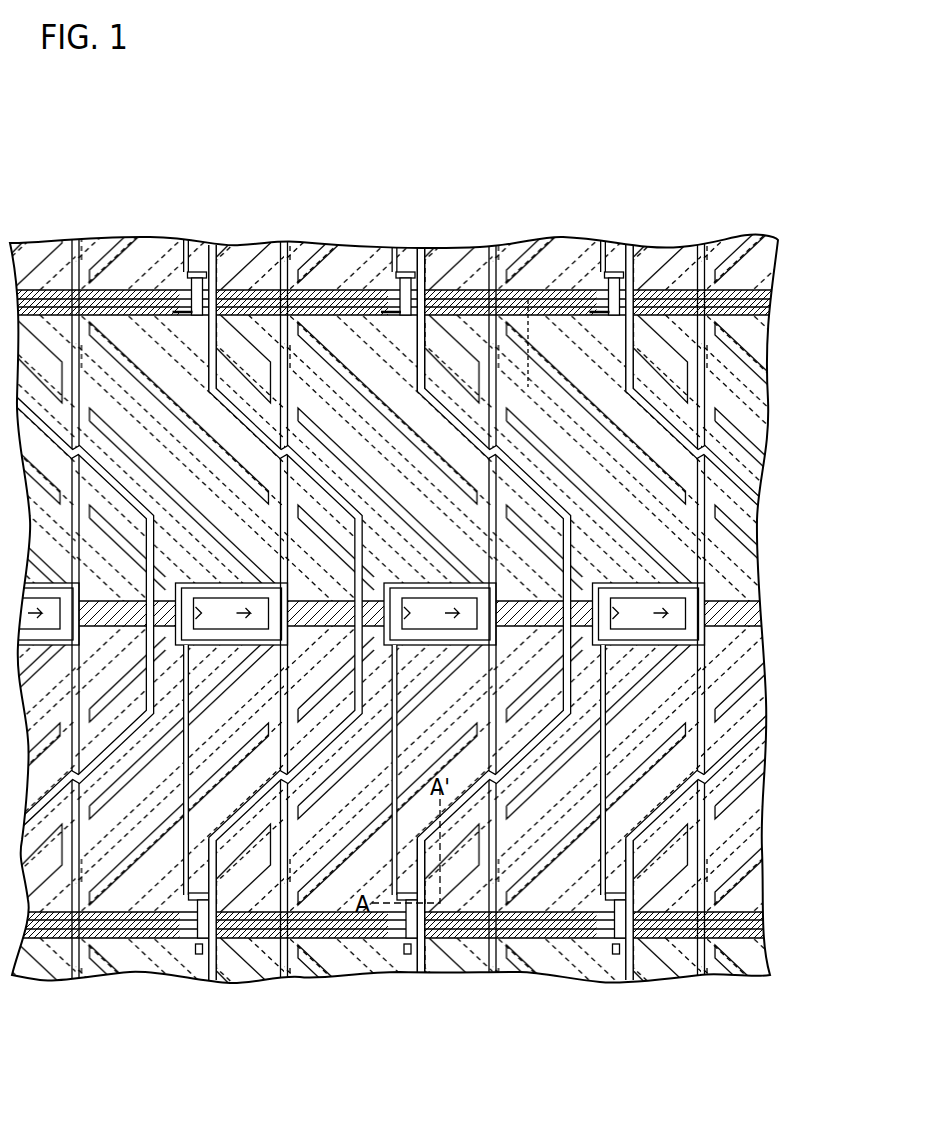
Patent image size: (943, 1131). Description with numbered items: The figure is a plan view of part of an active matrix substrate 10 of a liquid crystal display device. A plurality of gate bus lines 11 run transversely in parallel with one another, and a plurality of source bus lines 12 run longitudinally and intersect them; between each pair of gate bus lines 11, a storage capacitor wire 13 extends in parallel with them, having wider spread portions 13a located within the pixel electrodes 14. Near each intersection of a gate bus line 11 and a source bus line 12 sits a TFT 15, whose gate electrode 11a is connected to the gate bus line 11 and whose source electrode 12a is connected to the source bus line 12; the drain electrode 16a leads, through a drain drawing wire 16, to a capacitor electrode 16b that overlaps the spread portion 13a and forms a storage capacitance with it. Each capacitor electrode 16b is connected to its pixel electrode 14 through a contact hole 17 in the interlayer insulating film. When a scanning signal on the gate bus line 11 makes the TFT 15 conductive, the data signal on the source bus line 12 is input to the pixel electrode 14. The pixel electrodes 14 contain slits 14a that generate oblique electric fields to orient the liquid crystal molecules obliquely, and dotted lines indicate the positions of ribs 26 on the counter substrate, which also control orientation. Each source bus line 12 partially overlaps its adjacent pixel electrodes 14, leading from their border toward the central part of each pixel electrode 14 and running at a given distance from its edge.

The active matrix substrate 10 is at (700, 143).
The gate bus line 11 is at (767, 301).
The gate electrode 11a is at (625, 893).
The source bus line 12 is at (206, 353).
The source electrode 12a is at (631, 932).
The storage capacitor wire 13 is at (759, 612).
The spread portion 13a is at (691, 578).
The pixel electrode 14 is at (677, 416).
The slit 14a is at (674, 481).
The TFT 15 is at (617, 955).
The drain drawing wire 16 is at (601, 700).
The drain electrode 16a is at (609, 928).
The capacitor electrode 16b is at (688, 629).
The contact hole 17 is at (688, 599).
The rib 26 is at (528, 300).